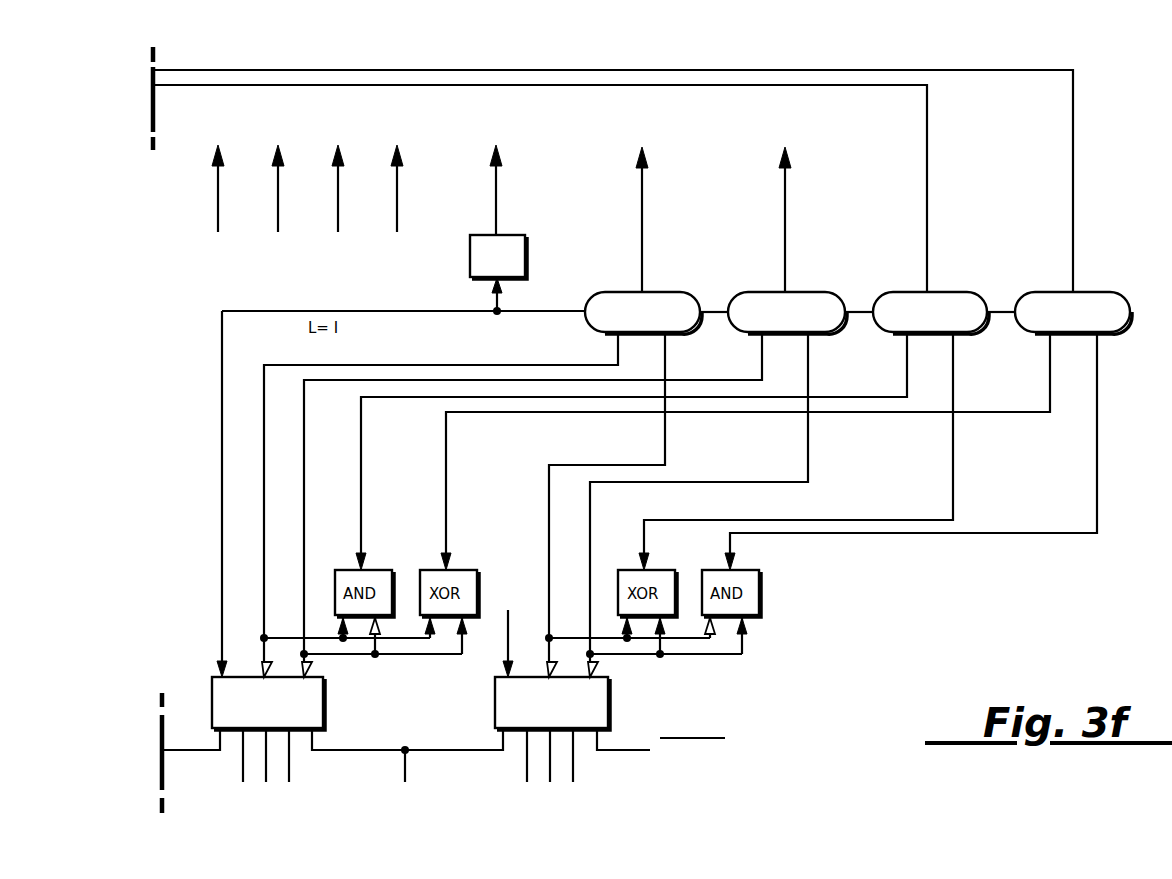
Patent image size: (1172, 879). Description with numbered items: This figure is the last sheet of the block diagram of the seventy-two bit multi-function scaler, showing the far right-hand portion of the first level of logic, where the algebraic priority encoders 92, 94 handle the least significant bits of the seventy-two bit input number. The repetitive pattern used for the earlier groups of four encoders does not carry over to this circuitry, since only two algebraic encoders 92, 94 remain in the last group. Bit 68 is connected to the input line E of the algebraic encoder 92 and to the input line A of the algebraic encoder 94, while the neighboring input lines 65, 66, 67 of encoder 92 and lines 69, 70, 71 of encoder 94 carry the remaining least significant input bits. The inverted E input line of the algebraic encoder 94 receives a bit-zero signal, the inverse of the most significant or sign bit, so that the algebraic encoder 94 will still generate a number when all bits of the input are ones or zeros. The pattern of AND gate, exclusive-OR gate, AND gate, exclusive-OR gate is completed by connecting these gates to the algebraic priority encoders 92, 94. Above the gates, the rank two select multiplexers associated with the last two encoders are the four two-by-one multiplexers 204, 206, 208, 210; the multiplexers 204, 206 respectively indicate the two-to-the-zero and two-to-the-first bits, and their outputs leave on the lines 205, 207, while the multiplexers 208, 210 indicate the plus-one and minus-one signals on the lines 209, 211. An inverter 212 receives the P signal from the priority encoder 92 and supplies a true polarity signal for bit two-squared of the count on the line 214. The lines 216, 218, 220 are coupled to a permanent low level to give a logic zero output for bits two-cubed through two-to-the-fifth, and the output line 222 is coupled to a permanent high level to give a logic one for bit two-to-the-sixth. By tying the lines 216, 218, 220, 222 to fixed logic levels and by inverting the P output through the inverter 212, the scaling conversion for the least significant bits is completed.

The output line 222 is at (218, 183).
The line 220 is at (278, 183).
The line 218 is at (338, 183).
The line 216 is at (397, 183).
The line 214 is at (496, 183).
The inverter 212 is at (525, 252).
The output line 2^1 205 is at (642, 183).
The output line 2^0 207 is at (785, 183).
The +1 input line 209 is at (927, 183).
The -1 input line 211 is at (1073, 183).
The 2×1 multiplexer 204 is at (668, 292).
The 2×1 multiplexer 206 is at (812, 292).
The 2×1 multiplexer 208 is at (955, 292).
The 2×1 multiplexer 210 is at (1095, 292).
The algebraic priority encoder 92 is at (323, 688).
The algebraic priority encoder 94 is at (608, 688).
The output line 65 is at (230, 767).
The output line 66 is at (264, 767).
The output line 67 is at (300, 767).
The bit 68 is at (407, 767).
The output line 69 is at (517, 767).
The output line 70 is at (553, 767).
The output line 71 is at (586, 767).